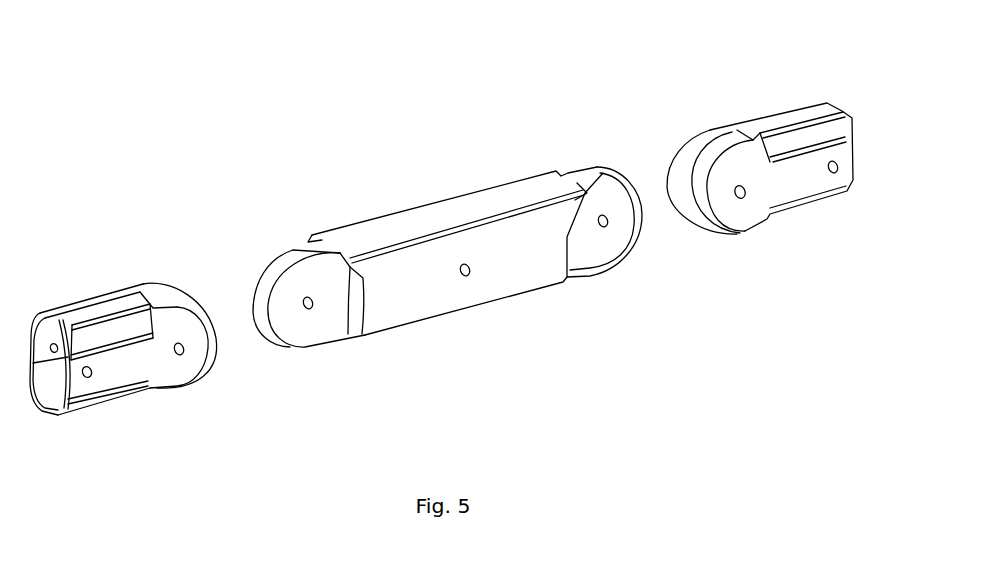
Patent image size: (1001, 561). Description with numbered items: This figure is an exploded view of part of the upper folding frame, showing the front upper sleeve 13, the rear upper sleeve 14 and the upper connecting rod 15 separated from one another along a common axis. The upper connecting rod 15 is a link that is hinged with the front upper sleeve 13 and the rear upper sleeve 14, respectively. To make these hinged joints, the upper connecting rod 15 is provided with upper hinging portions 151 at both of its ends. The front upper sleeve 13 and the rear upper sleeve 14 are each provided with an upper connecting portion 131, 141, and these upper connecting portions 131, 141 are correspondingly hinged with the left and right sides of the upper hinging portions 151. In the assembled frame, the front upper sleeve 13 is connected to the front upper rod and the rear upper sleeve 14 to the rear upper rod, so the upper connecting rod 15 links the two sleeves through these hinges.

The front upper sleeve 13 is at (90, 312).
The upper connecting portion 131 is at (197, 367).
The rear upper sleeve 14 is at (778, 113).
The upper connecting portion 141 is at (738, 230).
The upper connecting rod 15 is at (452, 208).
The upper hinging portion 151 is at (312, 333).